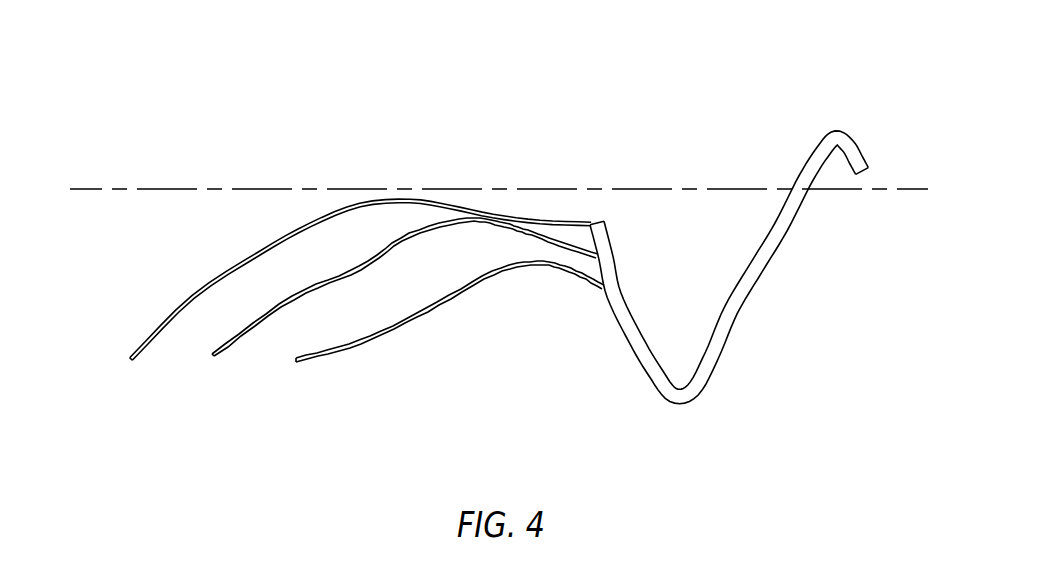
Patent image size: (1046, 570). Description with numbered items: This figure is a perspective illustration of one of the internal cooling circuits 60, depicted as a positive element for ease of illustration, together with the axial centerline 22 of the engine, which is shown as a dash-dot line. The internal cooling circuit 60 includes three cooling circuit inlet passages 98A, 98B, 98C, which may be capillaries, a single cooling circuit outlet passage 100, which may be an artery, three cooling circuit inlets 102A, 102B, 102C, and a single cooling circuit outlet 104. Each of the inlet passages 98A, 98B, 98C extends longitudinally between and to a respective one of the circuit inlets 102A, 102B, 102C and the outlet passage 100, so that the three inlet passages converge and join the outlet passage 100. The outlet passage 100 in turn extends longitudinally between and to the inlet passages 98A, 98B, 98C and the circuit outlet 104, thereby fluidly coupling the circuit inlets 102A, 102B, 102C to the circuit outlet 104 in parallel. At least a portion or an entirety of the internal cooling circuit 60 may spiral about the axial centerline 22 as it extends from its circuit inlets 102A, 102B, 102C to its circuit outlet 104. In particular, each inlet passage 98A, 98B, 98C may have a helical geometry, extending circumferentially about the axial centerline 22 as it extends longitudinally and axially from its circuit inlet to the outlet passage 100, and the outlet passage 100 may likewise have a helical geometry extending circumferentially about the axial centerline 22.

The axial centerline 22 is at (76, 192).
The internal cooling circuit 60 is at (443, 123).
The cooling circuit inlet passage 98A is at (214, 279).
The cooling circuit inlet passage 98B is at (296, 291).
The cooling circuit inlet passage 98C is at (379, 340).
The cooling circuit outlet passage 100 is at (788, 172).
The cooling circuit inlet 102A is at (131, 361).
The cooling circuit inlet 102B is at (213, 357).
The cooling circuit inlet 102C is at (296, 362).
The cooling circuit outlet 104 is at (859, 177).